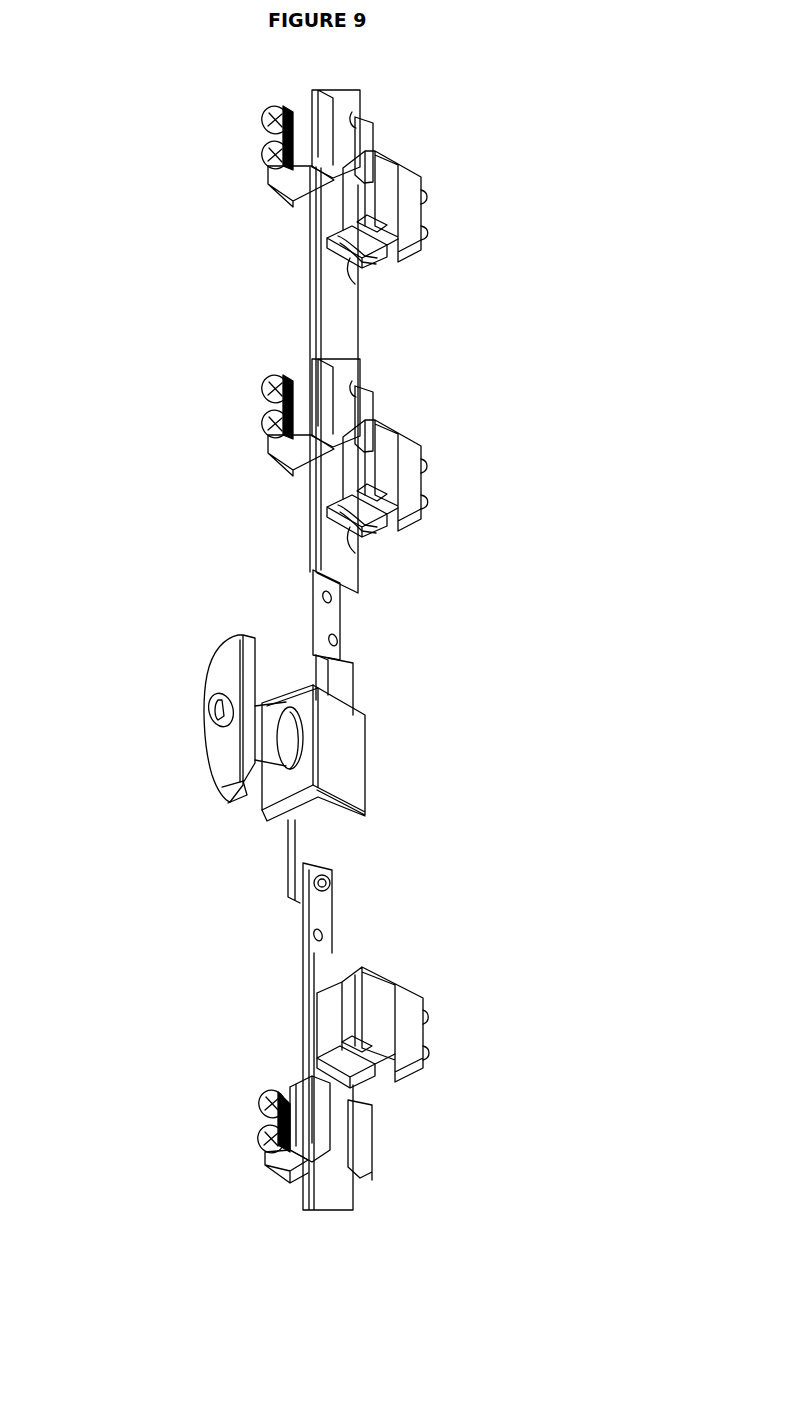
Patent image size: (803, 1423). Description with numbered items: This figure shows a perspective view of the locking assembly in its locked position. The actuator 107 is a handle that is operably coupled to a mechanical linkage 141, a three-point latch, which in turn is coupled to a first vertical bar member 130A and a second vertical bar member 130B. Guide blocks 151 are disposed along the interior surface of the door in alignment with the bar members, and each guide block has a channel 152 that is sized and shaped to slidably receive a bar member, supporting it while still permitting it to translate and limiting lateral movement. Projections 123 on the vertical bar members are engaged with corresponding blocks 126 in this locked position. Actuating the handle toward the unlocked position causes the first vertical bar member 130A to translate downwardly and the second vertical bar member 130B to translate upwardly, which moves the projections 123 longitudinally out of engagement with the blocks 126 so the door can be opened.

The actuator 107 is at (185, 780).
The projections 123 is at (345, 243).
The blocks 126 is at (403, 183).
The first vertical bar member 130A is at (323, 297).
The second vertical bar member 130B is at (333, 1198).
The mechanical linkage 141 is at (353, 750).
The guide blocks 151 is at (307, 120).
The channel 152 is at (357, 112).